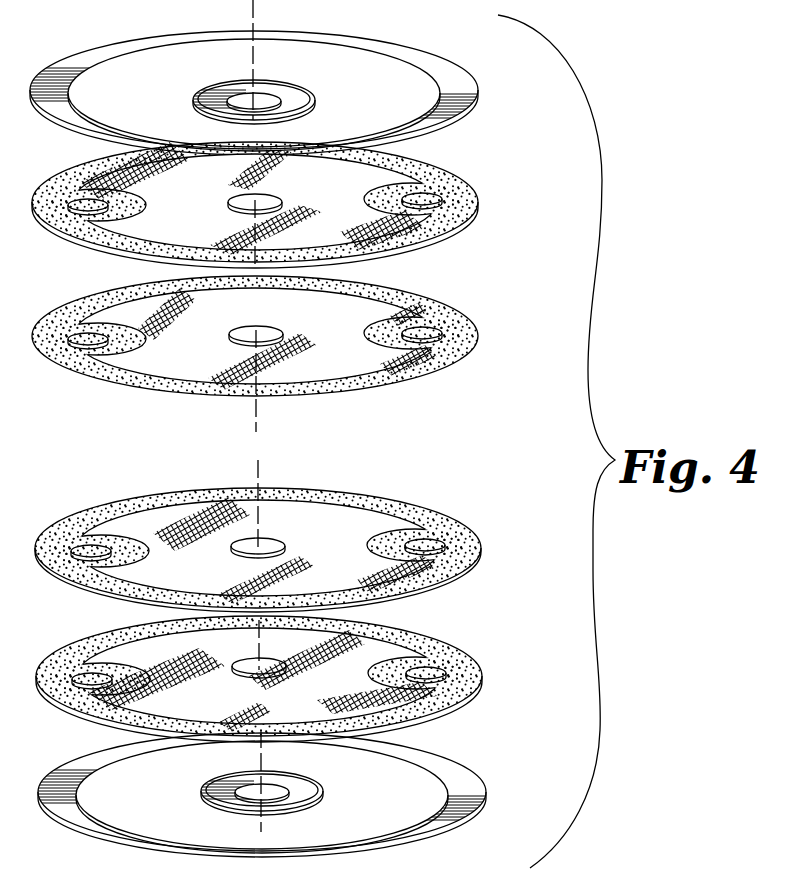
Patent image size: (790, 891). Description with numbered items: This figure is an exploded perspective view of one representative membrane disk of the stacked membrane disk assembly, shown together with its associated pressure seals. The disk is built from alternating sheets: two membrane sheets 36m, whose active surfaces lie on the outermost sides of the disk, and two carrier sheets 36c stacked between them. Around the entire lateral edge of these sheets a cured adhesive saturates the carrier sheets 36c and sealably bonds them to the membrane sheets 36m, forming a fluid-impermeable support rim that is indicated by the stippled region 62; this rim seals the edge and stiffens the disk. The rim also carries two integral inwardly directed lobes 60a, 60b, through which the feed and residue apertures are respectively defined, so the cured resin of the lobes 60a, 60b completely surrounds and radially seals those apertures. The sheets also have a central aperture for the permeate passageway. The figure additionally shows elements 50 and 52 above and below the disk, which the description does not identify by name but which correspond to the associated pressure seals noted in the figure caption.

The end plate 50 is at (440, 30).
The central hub opening 52 is at (300, 101).
The membrane sheets 36m is at (224, 236).
The carrier sheets 36c is at (216, 372).
The inwardly directed lobe 60a is at (391, 195).
The inwardly directed lobe 60b is at (139, 199).
The stippled region 62 is at (100, 243).